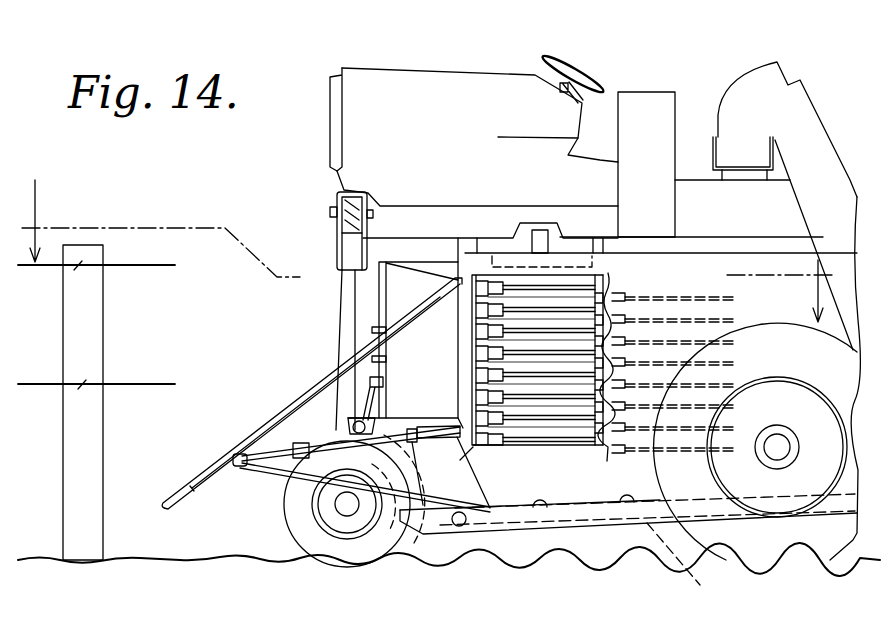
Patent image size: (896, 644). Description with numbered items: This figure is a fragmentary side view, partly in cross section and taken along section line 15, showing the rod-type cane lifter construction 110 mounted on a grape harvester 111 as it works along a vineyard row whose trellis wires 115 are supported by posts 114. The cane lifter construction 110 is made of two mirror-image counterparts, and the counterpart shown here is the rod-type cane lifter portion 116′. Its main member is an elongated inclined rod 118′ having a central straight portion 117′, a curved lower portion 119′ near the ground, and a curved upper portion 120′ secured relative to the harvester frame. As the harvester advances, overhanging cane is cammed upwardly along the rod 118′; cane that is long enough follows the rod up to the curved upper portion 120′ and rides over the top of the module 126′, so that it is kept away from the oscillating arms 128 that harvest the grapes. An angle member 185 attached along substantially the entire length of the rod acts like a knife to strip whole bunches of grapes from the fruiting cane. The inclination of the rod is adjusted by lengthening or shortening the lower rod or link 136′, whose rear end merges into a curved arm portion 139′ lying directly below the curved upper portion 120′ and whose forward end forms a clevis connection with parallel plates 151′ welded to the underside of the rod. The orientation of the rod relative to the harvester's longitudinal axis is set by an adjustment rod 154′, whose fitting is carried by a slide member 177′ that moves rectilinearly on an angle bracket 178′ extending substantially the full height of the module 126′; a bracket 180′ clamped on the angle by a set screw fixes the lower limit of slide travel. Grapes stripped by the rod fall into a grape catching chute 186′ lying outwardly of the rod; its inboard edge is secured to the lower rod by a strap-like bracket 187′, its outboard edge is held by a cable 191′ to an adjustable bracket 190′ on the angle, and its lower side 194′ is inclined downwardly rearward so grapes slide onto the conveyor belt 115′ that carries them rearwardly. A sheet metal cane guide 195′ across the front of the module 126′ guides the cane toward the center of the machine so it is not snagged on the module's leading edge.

The grape harvester 111 is at (448, 72).
The section line 15 is at (52, 221).
The trellis wire 115 is at (165, 265).
The rod-type cane lifter construction 110 is at (240, 353).
The angle member 185 is at (292, 375).
The adjustment rod 154′ is at (290, 405).
The angle bracket 178′ is at (395, 277).
The sheet metal cane guide 195′ is at (415, 276).
The curved upper portion 120′ is at (444, 270).
The module 126′ is at (570, 252).
The oscillating arms 128 is at (578, 290).
The slide member 177′ is at (347, 318).
The bracket 180′ is at (344, 356).
The cable 191′ is at (342, 384).
The bracket 190′ is at (385, 385).
The curved arm portion 139′ is at (455, 425).
The elongated inclined rod 118′ is at (250, 437).
The central straight portion 117′ is at (224, 458).
The rod-type cane lifter portion 116′ is at (198, 468).
The post 114 is at (63, 458).
The parallel plates 151′ is at (170, 495).
The curved lower portion 119′ is at (169, 510).
The lower side of chute 194′ is at (241, 472).
The bracket 187′ is at (293, 506).
The grape catching chute 186′ is at (315, 490).
The lower rod or link 136′ is at (347, 512).
The conveyor belt 115′ is at (545, 505).